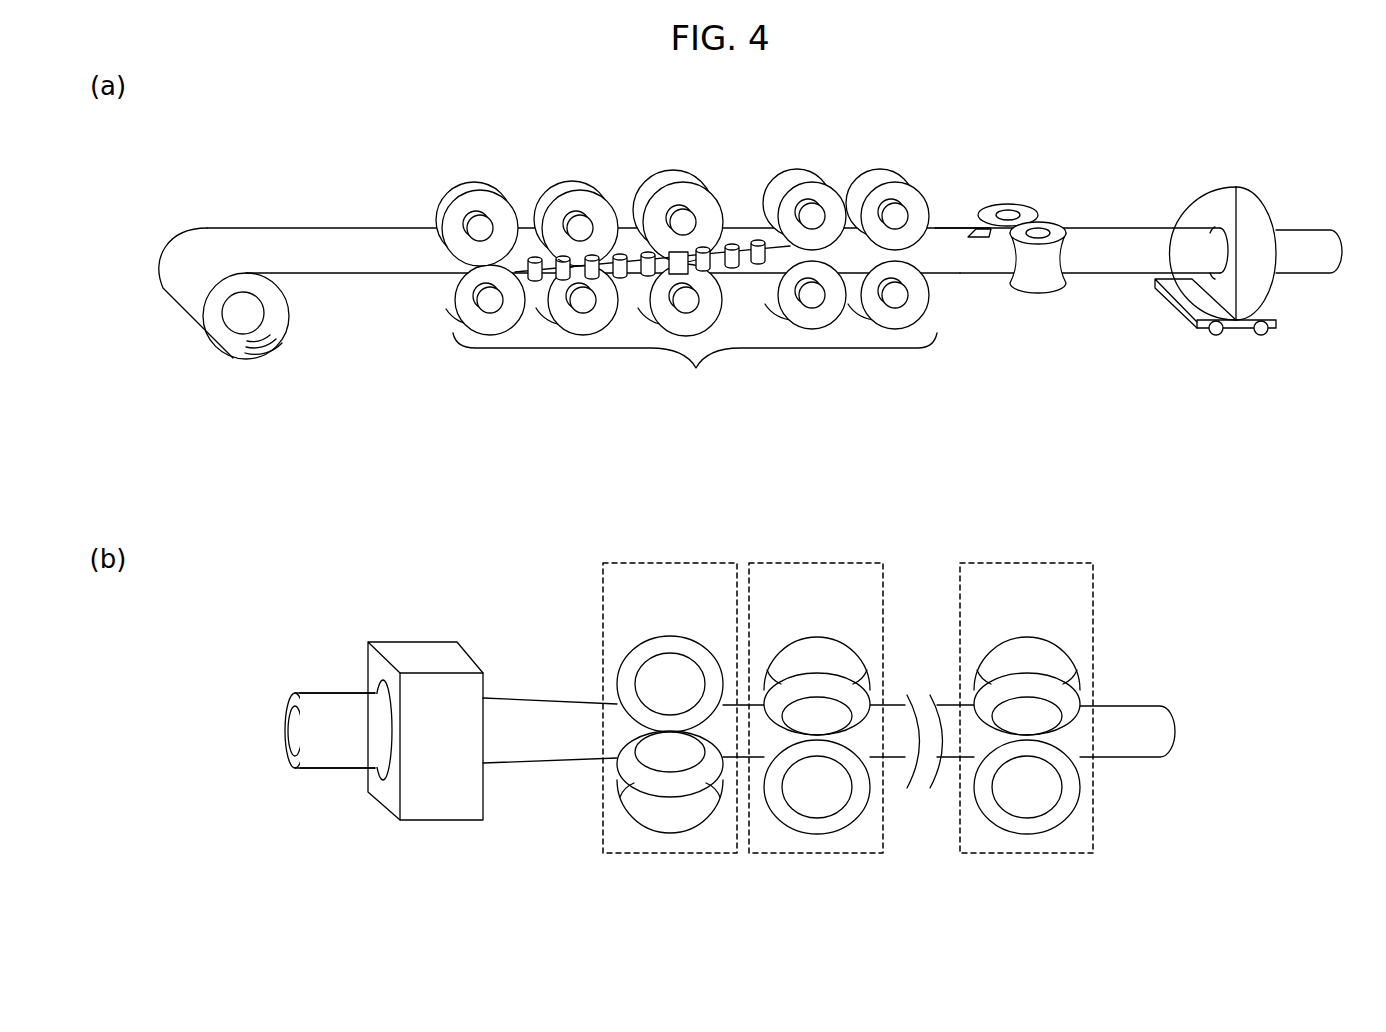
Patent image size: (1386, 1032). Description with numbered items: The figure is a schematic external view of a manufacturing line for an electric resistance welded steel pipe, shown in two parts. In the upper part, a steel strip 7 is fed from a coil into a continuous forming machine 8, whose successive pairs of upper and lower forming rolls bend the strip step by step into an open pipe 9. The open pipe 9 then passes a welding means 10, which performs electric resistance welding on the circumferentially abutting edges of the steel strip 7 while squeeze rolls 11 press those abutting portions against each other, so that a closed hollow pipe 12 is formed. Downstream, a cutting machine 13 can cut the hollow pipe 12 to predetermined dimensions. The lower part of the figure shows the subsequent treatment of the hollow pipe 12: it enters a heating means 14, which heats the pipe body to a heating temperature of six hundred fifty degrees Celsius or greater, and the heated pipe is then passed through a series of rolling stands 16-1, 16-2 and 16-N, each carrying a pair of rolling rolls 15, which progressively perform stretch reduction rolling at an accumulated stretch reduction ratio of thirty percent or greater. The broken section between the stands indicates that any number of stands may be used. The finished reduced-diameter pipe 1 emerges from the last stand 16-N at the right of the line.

The reduced-diameter tube (finished tube) 1 is at (1163, 733).
The steel strip 7 is at (220, 228).
The continuous forming machine 8 is at (696, 368).
The open pipe 9 is at (945, 230).
The welding means 10 is at (980, 228).
The squeeze rolls 11 is at (1040, 278).
The hollow pipe 12 is at (1116, 262).
The cutting machine 13 is at (1243, 197).
The heating means 14 is at (443, 810).
The rolling rolls 15 is at (669, 645).
The rolling stand 16-1 is at (673, 858).
The rolling stand 16-2 is at (817, 858).
The rolling stand 16-N is at (1027, 858).